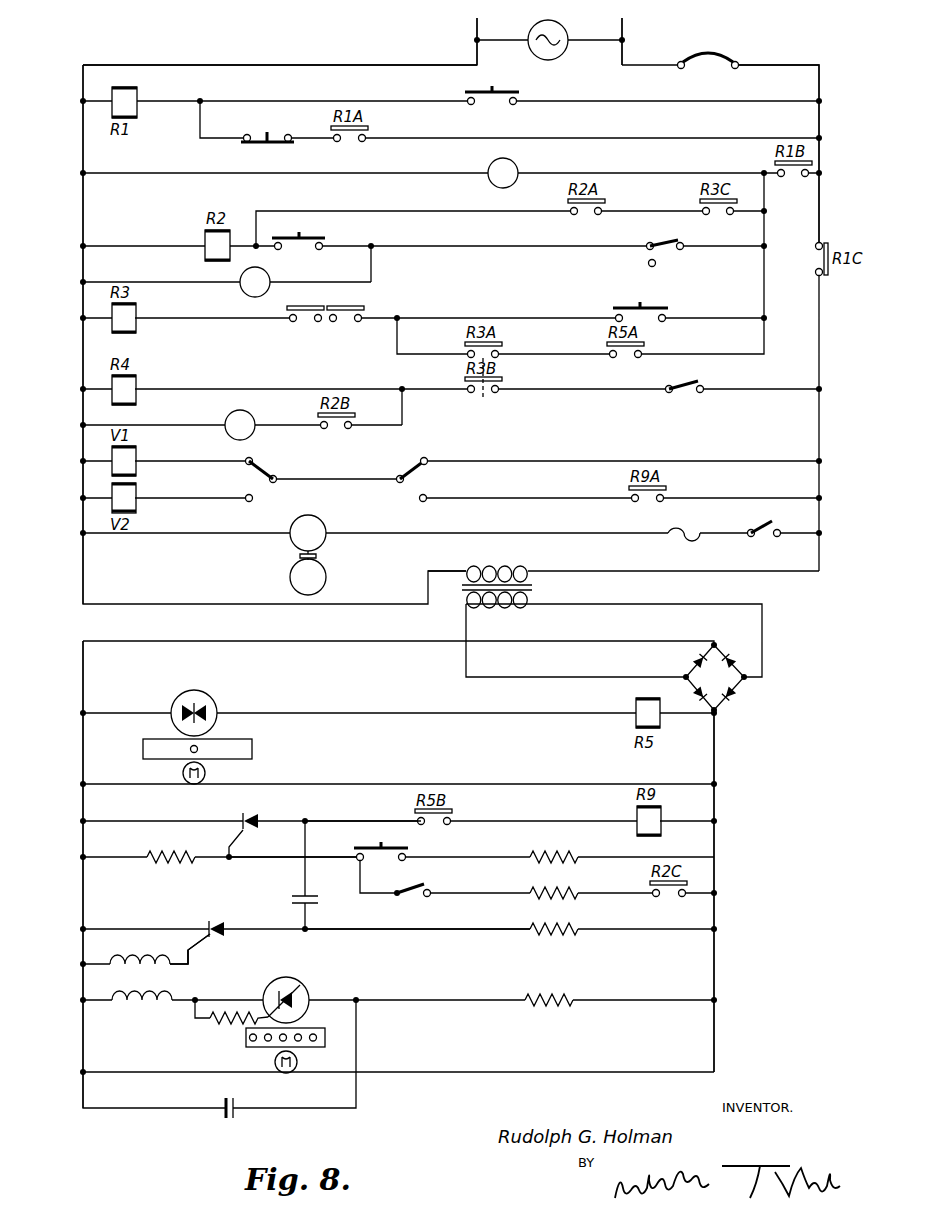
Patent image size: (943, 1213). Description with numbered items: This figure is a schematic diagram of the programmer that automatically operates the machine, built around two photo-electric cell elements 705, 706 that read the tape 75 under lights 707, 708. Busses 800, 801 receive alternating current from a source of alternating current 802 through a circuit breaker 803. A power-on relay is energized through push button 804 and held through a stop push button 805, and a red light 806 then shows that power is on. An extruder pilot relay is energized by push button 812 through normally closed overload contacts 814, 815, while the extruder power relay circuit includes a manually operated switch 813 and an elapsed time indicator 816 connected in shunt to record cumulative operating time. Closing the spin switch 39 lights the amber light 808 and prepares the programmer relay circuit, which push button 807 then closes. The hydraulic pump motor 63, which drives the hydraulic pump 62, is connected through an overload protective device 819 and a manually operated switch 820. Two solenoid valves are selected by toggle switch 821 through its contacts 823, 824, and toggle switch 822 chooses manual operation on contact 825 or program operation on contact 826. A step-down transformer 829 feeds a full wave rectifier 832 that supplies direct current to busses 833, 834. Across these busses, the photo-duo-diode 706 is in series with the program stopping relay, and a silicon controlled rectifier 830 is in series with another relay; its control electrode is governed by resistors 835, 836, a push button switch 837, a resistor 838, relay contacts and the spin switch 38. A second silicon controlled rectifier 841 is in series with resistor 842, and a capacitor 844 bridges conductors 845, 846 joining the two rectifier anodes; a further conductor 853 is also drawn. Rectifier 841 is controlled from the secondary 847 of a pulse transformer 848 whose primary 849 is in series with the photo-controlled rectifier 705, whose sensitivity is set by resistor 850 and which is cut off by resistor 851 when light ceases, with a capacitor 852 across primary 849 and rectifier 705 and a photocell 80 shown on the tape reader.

The bus 800 is at (477, 22).
The bus 801 is at (622, 22).
The source of alternating current 802 is at (552, 58).
The circuit breaker 803 is at (718, 53).
The push button 804 is at (471, 88).
The stop push button 805 is at (258, 135).
The red light 806 is at (491, 164).
The push button 807 is at (312, 236).
The amber light 808 is at (270, 276).
The spin switch 39 is at (665, 252).
The push button 812 is at (636, 302).
The manually operated switch 813 is at (690, 383).
The normally closed contact 814 is at (313, 305).
The normally closed contact 815 is at (343, 306).
The elapsed time indicator 816 is at (252, 436).
The overload protective device 819 is at (676, 524).
The manually operated switch 820 is at (760, 524).
The toggle switch 821 is at (249, 465).
The toggle switch 822 is at (406, 474).
The upper contact 823 is at (257, 465).
The contact 824 is at (253, 500).
The contact 825 is at (422, 458).
The contact 826 is at (421, 501).
The step-down transformer 829 is at (537, 590).
The silicon controlled rectifier 830 is at (258, 812).
The full wave rectifier 832 is at (743, 686).
The bus 833 is at (83, 665).
The bus 834 is at (722, 756).
The resistor 835 is at (170, 866).
The resistor 836 is at (564, 848).
The push button switch 837 is at (395, 848).
The resistor 838 is at (565, 900).
The spin switch 38 is at (414, 884).
The silicon controlled rectifier 841 is at (222, 920).
The resistor 842 is at (553, 937).
The capacitor 844 is at (288, 898).
The conductor 845 is at (333, 821).
The conductor 846 is at (375, 935).
The secondary 847 is at (138, 956).
The pulse transformer 848 is at (178, 980).
The primary 849 is at (130, 1008).
The resistor 850 is at (222, 1030).
The resistor 851 is at (553, 1008).
The capacitor 852 is at (222, 1120).
The conductor 853 is at (290, 857).
The hydraulic pump 62 is at (290, 578).
The hydraulic pump motor 63 is at (320, 522).
The tape 75 is at (252, 749).
The photocell 80 is at (198, 746).
The photo-controlled rectifier 705 is at (290, 978).
The photo-duo-diode 706 is at (210, 696).
The light 707 is at (275, 1063).
The light 708 is at (206, 771).